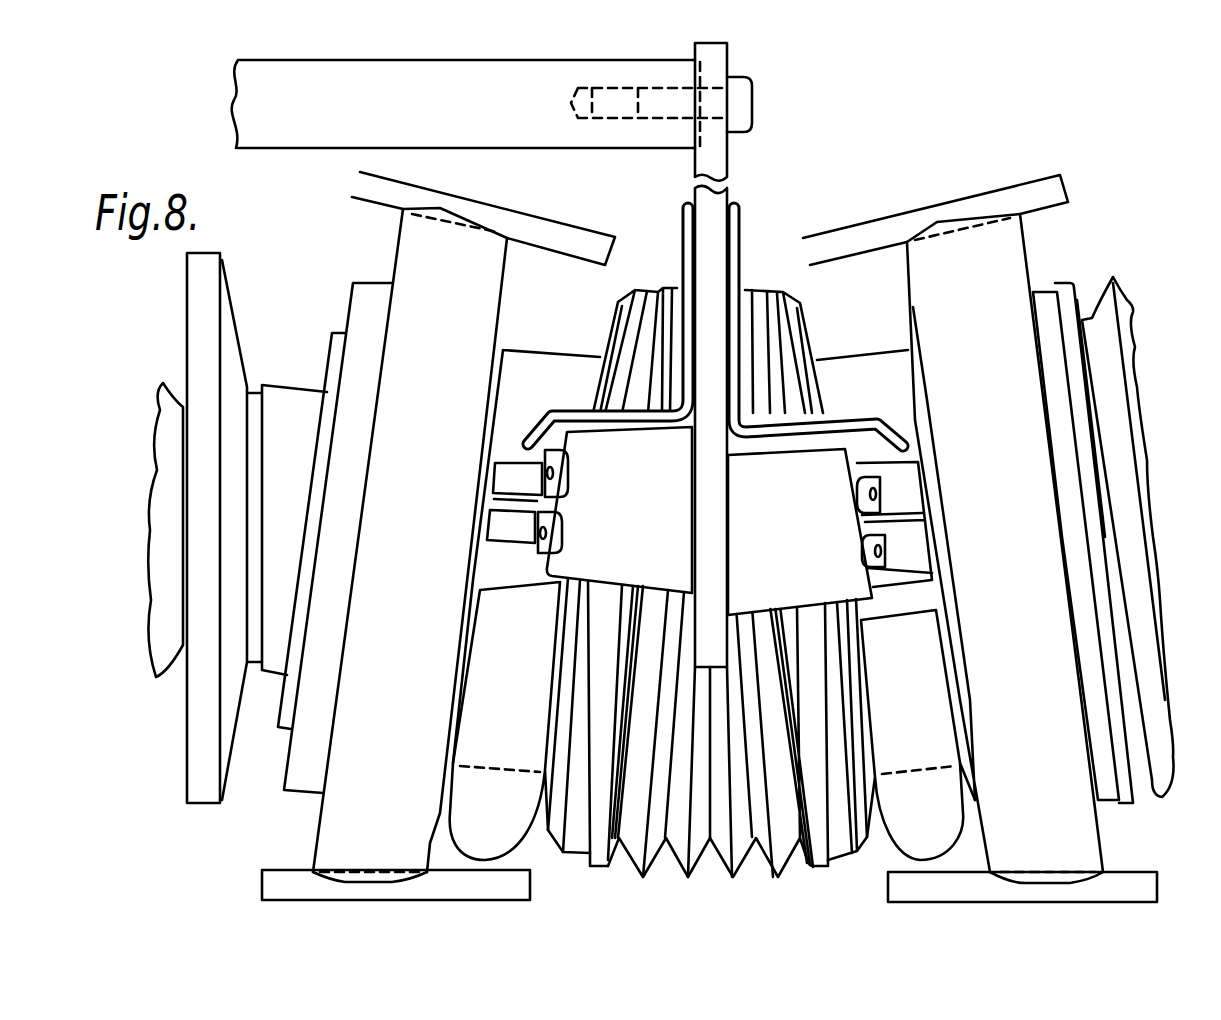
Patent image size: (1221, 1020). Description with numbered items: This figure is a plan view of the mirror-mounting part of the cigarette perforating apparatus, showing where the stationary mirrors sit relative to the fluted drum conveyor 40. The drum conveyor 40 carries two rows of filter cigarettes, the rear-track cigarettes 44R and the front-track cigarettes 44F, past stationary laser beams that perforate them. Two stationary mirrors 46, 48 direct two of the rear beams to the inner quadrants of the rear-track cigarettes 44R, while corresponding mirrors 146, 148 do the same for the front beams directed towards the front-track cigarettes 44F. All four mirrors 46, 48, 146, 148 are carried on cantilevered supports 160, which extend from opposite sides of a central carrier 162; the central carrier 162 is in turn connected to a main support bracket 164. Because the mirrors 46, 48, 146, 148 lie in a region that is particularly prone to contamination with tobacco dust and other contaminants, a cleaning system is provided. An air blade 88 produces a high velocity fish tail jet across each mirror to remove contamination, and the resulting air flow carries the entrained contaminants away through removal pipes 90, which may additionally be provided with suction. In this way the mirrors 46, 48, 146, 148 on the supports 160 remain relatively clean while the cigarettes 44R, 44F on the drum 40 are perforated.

The main support bracket 164 is at (282, 130).
The central carrier 162 is at (716, 206).
The filter cigarettes on rear track 44R is at (582, 232).
The filter cigarettes on front track 44F is at (880, 223).
The fluted drum conveyor 40 is at (402, 247).
The removal pipes 90 is at (517, 838).
The air blade 88 is at (530, 424).
The cantilevered supports 160 is at (648, 516).
The stationary mirror 48 is at (497, 467).
The stationary mirror 46 is at (492, 518).
The mirror 148 is at (908, 480).
The mirror 146 is at (920, 550).